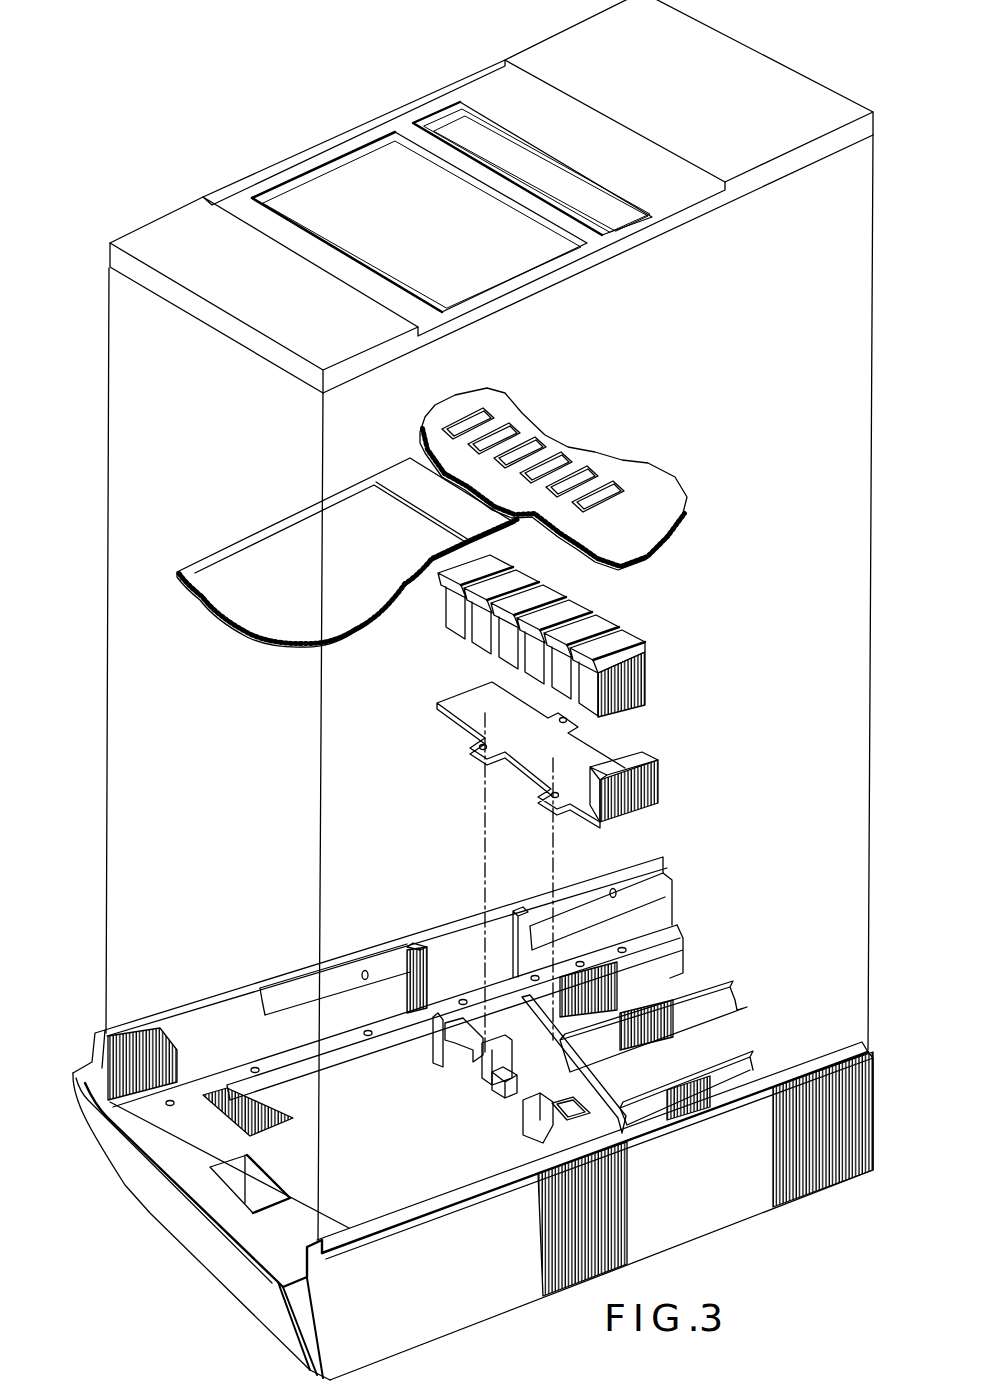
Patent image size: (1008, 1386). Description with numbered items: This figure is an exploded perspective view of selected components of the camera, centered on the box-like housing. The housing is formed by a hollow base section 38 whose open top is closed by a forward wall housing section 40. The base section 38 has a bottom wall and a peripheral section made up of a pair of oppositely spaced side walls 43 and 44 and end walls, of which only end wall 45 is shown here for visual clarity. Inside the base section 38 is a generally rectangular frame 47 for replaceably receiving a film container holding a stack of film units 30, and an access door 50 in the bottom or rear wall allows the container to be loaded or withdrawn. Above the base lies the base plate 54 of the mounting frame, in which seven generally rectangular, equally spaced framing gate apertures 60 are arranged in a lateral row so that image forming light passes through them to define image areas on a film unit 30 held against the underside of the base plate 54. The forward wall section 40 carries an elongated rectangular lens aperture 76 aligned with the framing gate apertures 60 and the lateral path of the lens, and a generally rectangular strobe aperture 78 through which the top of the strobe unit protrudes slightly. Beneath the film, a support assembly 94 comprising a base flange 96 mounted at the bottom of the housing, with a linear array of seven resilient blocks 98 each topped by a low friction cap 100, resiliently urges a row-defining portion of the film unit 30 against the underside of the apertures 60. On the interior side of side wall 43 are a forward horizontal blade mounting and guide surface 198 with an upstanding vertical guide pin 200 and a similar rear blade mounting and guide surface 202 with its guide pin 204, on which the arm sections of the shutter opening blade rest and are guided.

The film unit 30 is at (290, 508).
The base section 38 is at (458, 1110).
The forward wall housing section 40 is at (721, 208).
The side wall 43 is at (217, 1000).
The side wall 44 is at (447, 1320).
The end wall 45 is at (197, 1245).
The frame 47 is at (250, 1110).
The access door 50 is at (375, 1151).
The base plate 54 is at (655, 482).
The framing gate apertures 60 is at (485, 418).
The lens aperture 76 is at (448, 130).
The strobe aperture 78 is at (345, 188).
The support assembly 94 is at (648, 633).
The base flange 96 is at (623, 803).
The resilient blocks 98 is at (475, 630).
The low friction cap 100 is at (607, 627).
The forward blade mounting and guide surface 198 is at (578, 908).
The guide pin 200 is at (613, 889).
The rear blade mounting and guide surface 202 is at (300, 1000).
The guide pin 204 is at (365, 972).